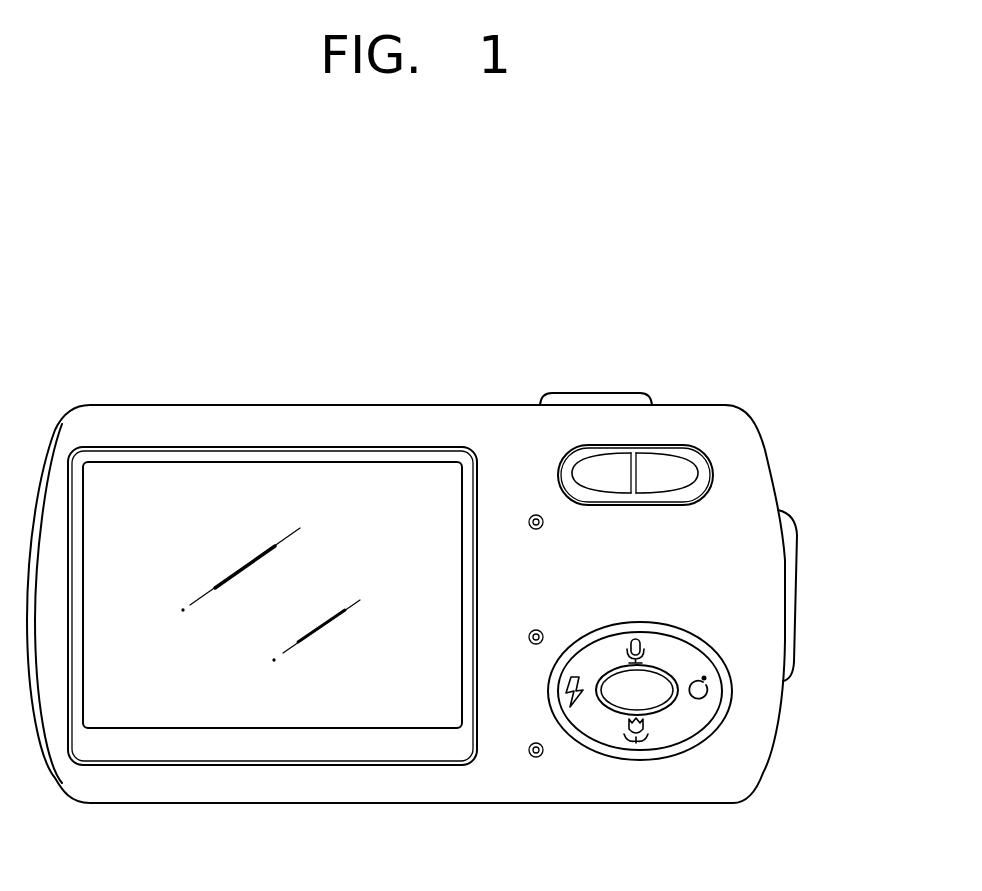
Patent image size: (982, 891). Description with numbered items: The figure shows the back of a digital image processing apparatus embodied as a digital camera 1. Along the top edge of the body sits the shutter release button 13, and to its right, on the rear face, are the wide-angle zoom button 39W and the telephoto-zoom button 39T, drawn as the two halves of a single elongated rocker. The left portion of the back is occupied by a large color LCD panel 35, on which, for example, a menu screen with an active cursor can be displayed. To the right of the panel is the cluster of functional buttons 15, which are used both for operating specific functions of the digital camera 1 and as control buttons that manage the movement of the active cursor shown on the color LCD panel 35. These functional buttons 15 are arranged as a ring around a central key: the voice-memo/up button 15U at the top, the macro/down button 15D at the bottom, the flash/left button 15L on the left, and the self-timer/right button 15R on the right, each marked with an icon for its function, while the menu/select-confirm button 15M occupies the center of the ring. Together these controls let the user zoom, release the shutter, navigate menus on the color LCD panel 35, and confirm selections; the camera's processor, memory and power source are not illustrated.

The digital camera 1 is at (747, 370).
The shutter release button 13 is at (553, 400).
The color LCD panel 35 is at (272, 715).
The wide-angle zoom button 39W is at (604, 463).
The telephoto-zoom button 39T is at (667, 465).
The functional buttons 15 is at (587, 754).
The voice-memo/up button 15U is at (633, 638).
The macro/down button 15D is at (643, 738).
The flash/left button 15L is at (565, 688).
The self-timer/right button 15R is at (707, 695).
The menu/select-confirm button 15M is at (652, 680).